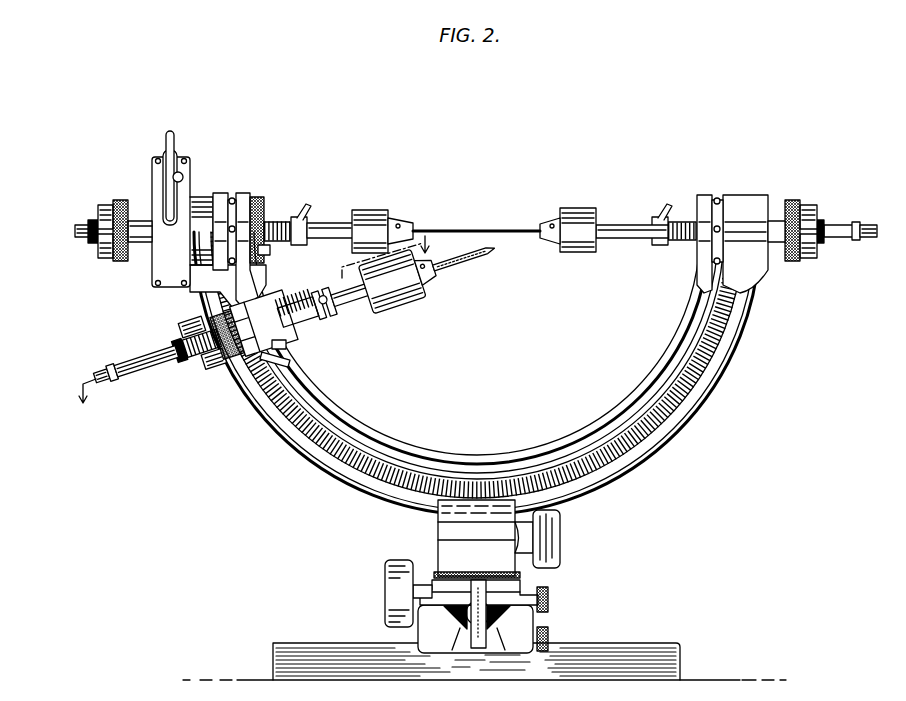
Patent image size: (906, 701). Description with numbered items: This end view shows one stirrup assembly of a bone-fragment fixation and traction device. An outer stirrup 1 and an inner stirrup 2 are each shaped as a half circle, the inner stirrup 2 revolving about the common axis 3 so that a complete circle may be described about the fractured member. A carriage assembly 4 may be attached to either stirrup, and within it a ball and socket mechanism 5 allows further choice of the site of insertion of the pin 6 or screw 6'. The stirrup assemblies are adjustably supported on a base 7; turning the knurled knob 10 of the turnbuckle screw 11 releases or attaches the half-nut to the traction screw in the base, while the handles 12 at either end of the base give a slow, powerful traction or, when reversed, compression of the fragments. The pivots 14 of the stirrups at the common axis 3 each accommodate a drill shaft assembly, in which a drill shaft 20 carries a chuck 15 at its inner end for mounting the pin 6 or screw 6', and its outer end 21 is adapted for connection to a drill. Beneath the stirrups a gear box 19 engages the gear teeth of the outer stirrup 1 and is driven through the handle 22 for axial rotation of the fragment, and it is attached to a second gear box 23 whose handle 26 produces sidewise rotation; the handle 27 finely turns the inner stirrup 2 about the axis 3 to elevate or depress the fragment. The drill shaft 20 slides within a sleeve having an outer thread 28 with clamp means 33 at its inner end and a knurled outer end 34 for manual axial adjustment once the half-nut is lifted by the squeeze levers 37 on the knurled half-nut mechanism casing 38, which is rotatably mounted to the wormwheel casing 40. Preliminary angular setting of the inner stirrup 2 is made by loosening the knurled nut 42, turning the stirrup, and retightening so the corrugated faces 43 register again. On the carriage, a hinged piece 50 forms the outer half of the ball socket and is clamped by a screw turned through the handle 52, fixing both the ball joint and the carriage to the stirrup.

The outer stirrup 1 is at (306, 458).
The inner stirrup 2 is at (438, 455).
The common axis 3 is at (338, 222).
The carriage assembly 4 is at (275, 330).
The ball and socket mechanism 5 is at (266, 303).
The pin 6 is at (476, 205).
The screw 6' is at (464, 272).
The base 7 is at (438, 628).
The knurled knob 10 is at (549, 609).
The turnbuckle screw 11 is at (262, 328).
The handles 12 is at (488, 640).
The pivots 14 is at (241, 197).
The chuck 15 is at (380, 210).
The gear box 19 is at (448, 555).
The drill shaft 20 is at (619, 225).
The outer end of drill shaft 21 is at (864, 224).
The handle 22 is at (560, 537).
The gear box 23 is at (520, 590).
The handle 26 is at (392, 602).
The handle 27 is at (178, 143).
The outer thread of sleeve 28 is at (284, 220).
The clamp means 33 is at (310, 217).
The knurled outer end of sleeve 34 is at (93, 244).
The squeeze levers 37 is at (105, 205).
The half-nut mechanism casing 38 is at (121, 200).
The wormwheel casing 40 is at (172, 260).
The knurled nut 42 is at (264, 200).
The corrugated faces 43 is at (268, 251).
The hinged piece of carriage 50 is at (286, 345).
The handle 52 is at (292, 362).